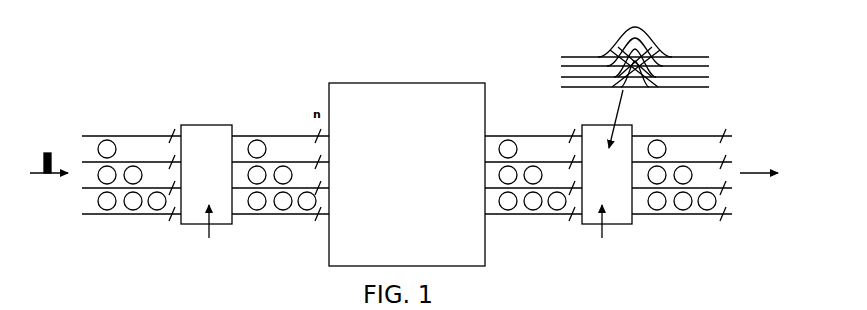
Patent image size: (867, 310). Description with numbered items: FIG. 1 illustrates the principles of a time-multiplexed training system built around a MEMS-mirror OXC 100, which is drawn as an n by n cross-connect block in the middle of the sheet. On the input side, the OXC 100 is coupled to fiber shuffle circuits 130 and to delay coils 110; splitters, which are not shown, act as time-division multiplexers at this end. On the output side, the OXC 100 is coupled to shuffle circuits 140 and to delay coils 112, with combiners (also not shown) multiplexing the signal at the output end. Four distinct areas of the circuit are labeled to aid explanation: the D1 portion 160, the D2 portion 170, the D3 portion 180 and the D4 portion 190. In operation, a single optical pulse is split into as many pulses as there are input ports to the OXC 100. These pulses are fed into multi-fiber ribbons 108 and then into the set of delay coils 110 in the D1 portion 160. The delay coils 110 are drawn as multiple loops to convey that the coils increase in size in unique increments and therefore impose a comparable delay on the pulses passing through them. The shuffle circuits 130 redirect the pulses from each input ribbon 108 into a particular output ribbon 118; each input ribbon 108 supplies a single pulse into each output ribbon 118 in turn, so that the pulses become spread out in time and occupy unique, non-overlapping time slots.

The MEMS-mirror OXC 100 is at (444, 77).
The multi-fiber ribbons 108 is at (87, 111).
The delay coils 110 is at (100, 218).
The delay coils 112 is at (503, 220).
The output ribbon 118 is at (745, 121).
The fiber shuffle circuits 130 is at (203, 110).
The shuffle circuits 140 is at (635, 117).
The D1 portion 160 is at (155, 218).
The D2 portion 170 is at (297, 225).
The D3 portion 180 is at (553, 222).
The D4 portion 190 is at (700, 225).